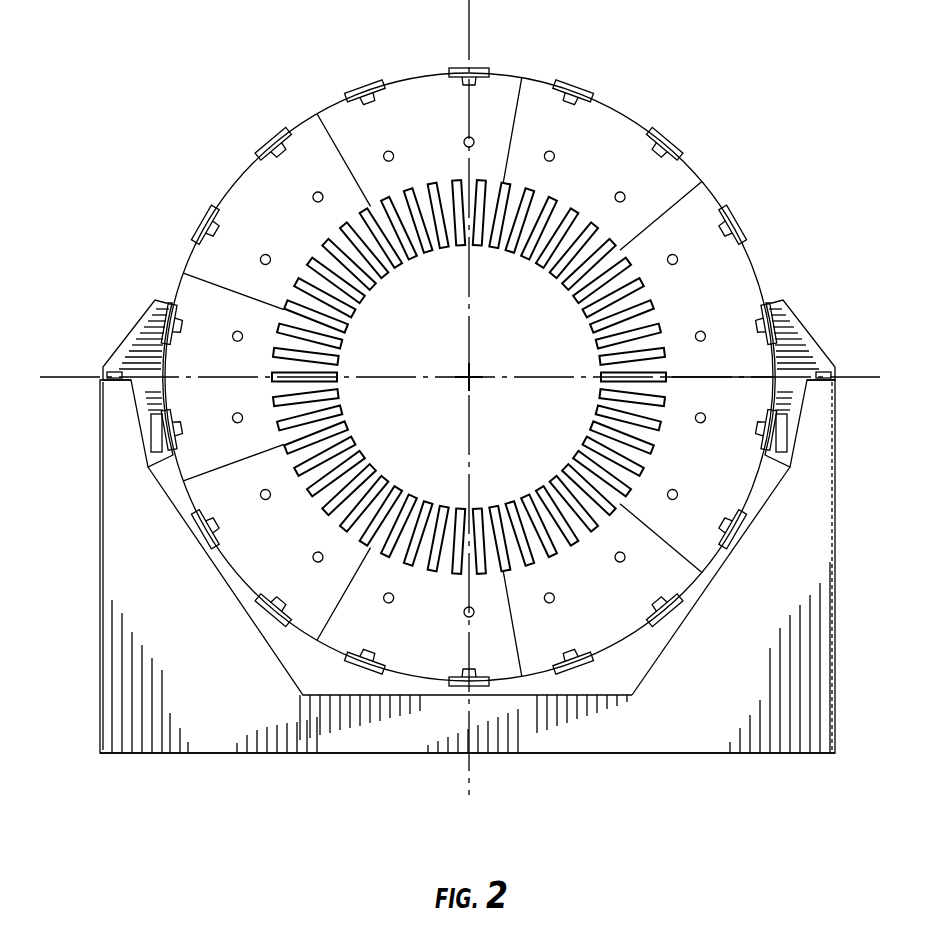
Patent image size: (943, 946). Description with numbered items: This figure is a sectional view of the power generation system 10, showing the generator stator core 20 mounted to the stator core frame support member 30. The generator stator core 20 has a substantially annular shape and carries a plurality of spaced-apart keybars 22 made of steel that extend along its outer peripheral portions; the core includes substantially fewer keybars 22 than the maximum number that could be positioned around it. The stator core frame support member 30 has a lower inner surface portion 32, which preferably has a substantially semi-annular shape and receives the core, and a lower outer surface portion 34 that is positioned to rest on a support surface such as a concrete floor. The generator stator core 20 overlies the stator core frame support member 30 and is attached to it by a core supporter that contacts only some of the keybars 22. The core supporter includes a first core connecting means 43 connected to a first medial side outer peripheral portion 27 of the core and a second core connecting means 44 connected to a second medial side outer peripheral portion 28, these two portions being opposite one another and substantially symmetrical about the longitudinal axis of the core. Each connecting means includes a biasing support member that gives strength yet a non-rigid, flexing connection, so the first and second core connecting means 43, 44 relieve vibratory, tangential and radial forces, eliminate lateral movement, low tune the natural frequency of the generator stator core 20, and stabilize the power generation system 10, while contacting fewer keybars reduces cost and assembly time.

The power generation system 10 is at (238, 95).
The generator stator core 20 is at (705, 183).
The keybars 22 is at (512, 78).
The first medial side outer peripheral portion 27 is at (177, 285).
The second medial side outer peripheral portion 28 is at (770, 288).
The stator core frame support member 30 is at (100, 582).
The lower inner surface portion 32 is at (557, 688).
The lower outer surface portion 34 is at (210, 754).
The first core connecting means 43 is at (112, 327).
The second core connecting means 44 is at (824, 340).